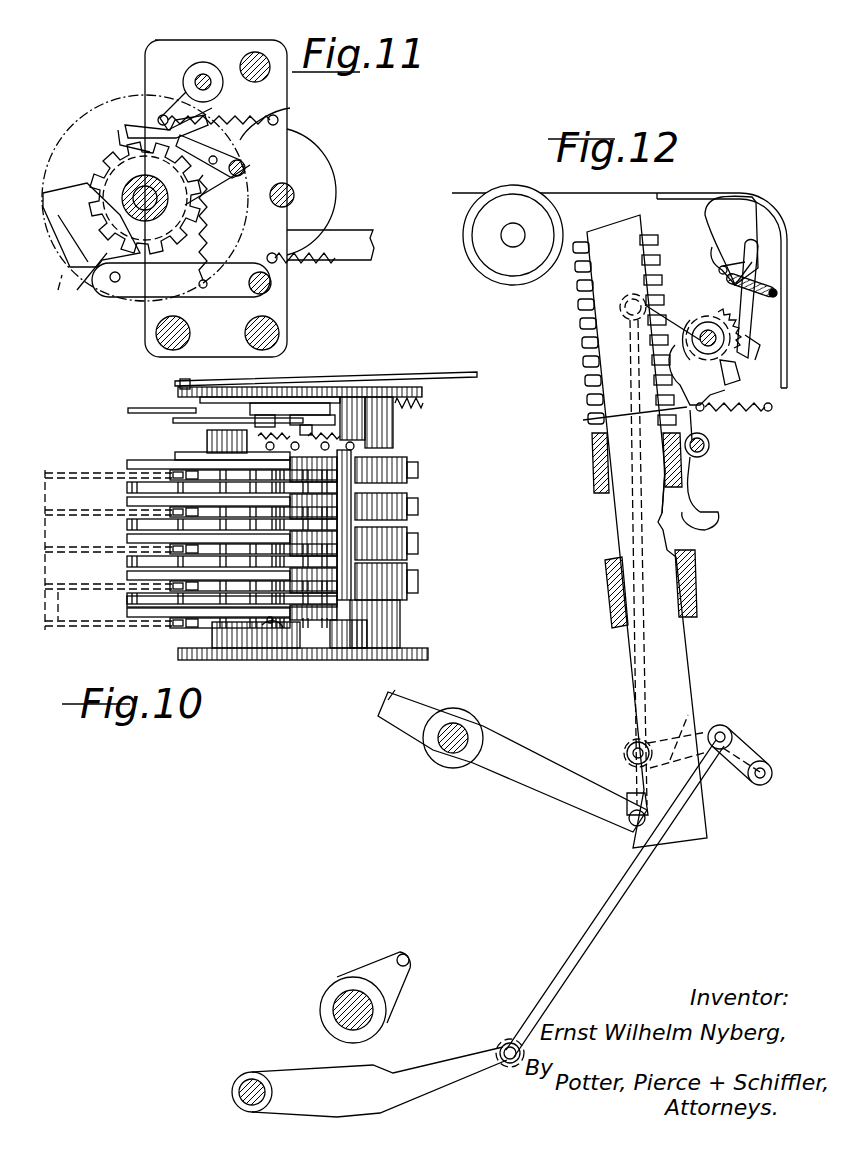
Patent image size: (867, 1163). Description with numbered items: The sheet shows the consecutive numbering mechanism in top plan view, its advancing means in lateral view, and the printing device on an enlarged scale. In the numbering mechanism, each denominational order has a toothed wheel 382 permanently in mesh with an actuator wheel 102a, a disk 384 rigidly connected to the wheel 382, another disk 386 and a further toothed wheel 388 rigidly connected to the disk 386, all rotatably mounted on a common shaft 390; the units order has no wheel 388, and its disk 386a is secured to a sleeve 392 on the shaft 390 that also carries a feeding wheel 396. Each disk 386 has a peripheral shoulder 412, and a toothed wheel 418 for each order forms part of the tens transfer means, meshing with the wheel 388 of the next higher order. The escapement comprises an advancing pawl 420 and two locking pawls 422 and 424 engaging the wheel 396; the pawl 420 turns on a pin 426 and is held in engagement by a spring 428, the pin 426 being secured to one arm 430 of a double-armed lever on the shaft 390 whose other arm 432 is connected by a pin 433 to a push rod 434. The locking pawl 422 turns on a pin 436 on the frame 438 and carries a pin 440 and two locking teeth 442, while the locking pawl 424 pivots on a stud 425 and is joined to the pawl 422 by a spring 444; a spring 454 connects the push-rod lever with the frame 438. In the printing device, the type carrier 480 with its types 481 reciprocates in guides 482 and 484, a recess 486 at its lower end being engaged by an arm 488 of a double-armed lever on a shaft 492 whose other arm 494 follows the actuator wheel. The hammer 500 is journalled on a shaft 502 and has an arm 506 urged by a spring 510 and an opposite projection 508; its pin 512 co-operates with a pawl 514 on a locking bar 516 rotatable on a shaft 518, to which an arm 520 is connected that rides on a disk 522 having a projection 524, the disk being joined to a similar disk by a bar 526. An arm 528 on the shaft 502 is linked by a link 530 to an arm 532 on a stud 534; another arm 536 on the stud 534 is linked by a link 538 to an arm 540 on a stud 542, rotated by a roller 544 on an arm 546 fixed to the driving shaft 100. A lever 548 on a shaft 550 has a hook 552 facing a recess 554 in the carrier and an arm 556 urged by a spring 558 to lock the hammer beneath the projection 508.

In FIG. 12, the main driving shaft 100 is at (380, 1015).
In FIG. 10, the actuator wheel 102a is at (74, 630).
In FIG. 10, the toothed wheel 382 is at (165, 498).
In FIG. 10, the disk 384 is at (173, 470).
In FIG. 10, the disk 386 is at (145, 620).
In FIG. 10, the disk of the units denominational order 386a is at (175, 463).
In FIG. 10, the toothed wheel 388 is at (127, 601).
In FIG. 11, the common shaft 390 is at (108, 186).
In FIG. 11, the sleeve 392 is at (130, 170).
In FIG. 10, the sleeve 392 is at (207, 440).
In FIG. 11, the feeding wheel 396 is at (130, 128).
In FIG. 10, the feeding wheel 396 is at (172, 421).
In FIG. 10, the peripheral shoulder 412 is at (318, 620).
In FIG. 10, the toothed wheel 418 is at (392, 582).
In FIG. 11, the advancing pawl 420 is at (152, 124).
In FIG. 10, the advancing pawl 420 is at (218, 396).
In FIG. 11, the locking pawl 422 is at (205, 288).
In FIG. 11, the locking pawl 424 is at (235, 160).
In FIG. 10, the locking pawl 424 is at (312, 414).
In FIG. 11, the stud 425 is at (246, 168).
In FIG. 10, the stud 425 is at (356, 444).
In FIG. 11, the pin 426 is at (203, 62).
In FIG. 10, the pin 426 is at (296, 402).
In FIG. 11, the spring 428 is at (282, 108).
In FIG. 10, the spring 428 is at (355, 454).
In FIG. 11, the arm of double-armed lever 430 is at (228, 117).
In FIG. 11, the arm of double-armed lever 432 is at (57, 245).
In FIG. 10, the arm of double-armed lever 432 is at (128, 410).
In FIG. 11, the pin 433 is at (58, 296).
In FIG. 10, the pin 433 is at (178, 385).
In FIG. 11, the push rod 434 is at (348, 240).
In FIG. 10, the push rod 434 is at (436, 378).
In FIG. 11, the pin 436 is at (272, 284).
In FIG. 11, the frame 438 is at (240, 198).
In FIG. 10, the frame 438 is at (290, 392).
In FIG. 11, the pin 440 is at (112, 290).
In FIG. 11, the locking teeth 442 is at (78, 277).
In FIG. 11, the spring 444 is at (236, 186).
In FIG. 11, the spring 454 is at (338, 262).
In FIG. 10, the spring 454 is at (424, 403).
In FIG. 12, the type carrier 480 is at (695, 700).
In FIG. 12, the types 481 is at (578, 340).
In FIG. 12, the guide 482 is at (592, 452).
In FIG. 12, the guide 484 is at (607, 578).
In FIG. 12, the recess 486 is at (630, 800).
In FIG. 12, the arm of double-armed lever 488 is at (520, 752).
In FIG. 12, the shaft 492 is at (455, 725).
In FIG. 12, the arm of double-armed lever 494 is at (420, 702).
In FIG. 12, the hammer 500 is at (745, 200).
In FIG. 12, the shaft 502 is at (725, 336).
In FIG. 12, the arm 506 is at (738, 372).
In FIG. 12, the projection 508 is at (692, 322).
In FIG. 12, the spring 510 is at (742, 318).
In FIG. 12, the pin 512 is at (718, 245).
In FIG. 12, the pawl 514 is at (716, 262).
In FIG. 12, the locking bar 516 is at (752, 262).
In FIG. 12, the shaft 518 is at (770, 282).
In FIG. 12, the arm 520 is at (762, 346).
In FIG. 12, the disk 522 is at (778, 293).
In FIG. 12, the projection 524 is at (740, 418).
In FIG. 12, the bar 526 is at (772, 407).
In FIG. 12, the arm 528 is at (645, 305).
In FIG. 12, the link 530 is at (630, 505).
In FIG. 12, the arm 532 is at (712, 724).
In FIG. 12, the stud 534 is at (768, 764).
In FIG. 12, the arm 536 is at (745, 742).
In FIG. 12, the link 538 is at (598, 878).
In FIG. 12, the arm 540 is at (477, 1052).
In FIG. 12, the stud 542 is at (252, 1072).
In FIG. 12, the roller 544 is at (406, 952).
In FIG. 12, the arm 546 is at (410, 984).
In FIG. 12, the lever 548 is at (712, 452).
In FIG. 12, the shaft 550 is at (728, 480).
In FIG. 12, the hook 552 is at (718, 520).
In FIG. 12, the recess 554 is at (660, 525).
In FIG. 12, the arm 556 is at (617, 418).
In FIG. 12, the spring 558 is at (722, 440).